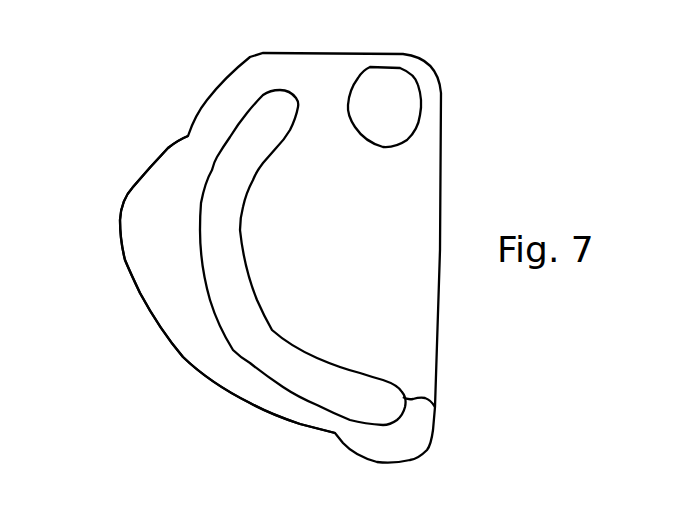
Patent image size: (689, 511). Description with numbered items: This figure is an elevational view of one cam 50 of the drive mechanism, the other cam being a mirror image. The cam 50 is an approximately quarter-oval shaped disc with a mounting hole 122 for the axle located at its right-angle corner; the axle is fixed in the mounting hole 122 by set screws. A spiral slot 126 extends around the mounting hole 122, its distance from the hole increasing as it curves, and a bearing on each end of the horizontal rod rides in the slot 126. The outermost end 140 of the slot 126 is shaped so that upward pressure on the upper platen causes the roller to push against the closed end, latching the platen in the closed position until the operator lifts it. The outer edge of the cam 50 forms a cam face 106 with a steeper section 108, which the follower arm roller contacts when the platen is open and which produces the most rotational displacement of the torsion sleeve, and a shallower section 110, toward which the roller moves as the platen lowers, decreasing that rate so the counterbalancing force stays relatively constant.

The cam 50 is at (480, 85).
The cam face 106 is at (138, 292).
The steeper section 108 is at (120, 218).
The shallower section 110 is at (285, 423).
The mounting hole 122 is at (420, 127).
The spiral slot 126 is at (260, 312).
The outermost end 140 is at (435, 407).